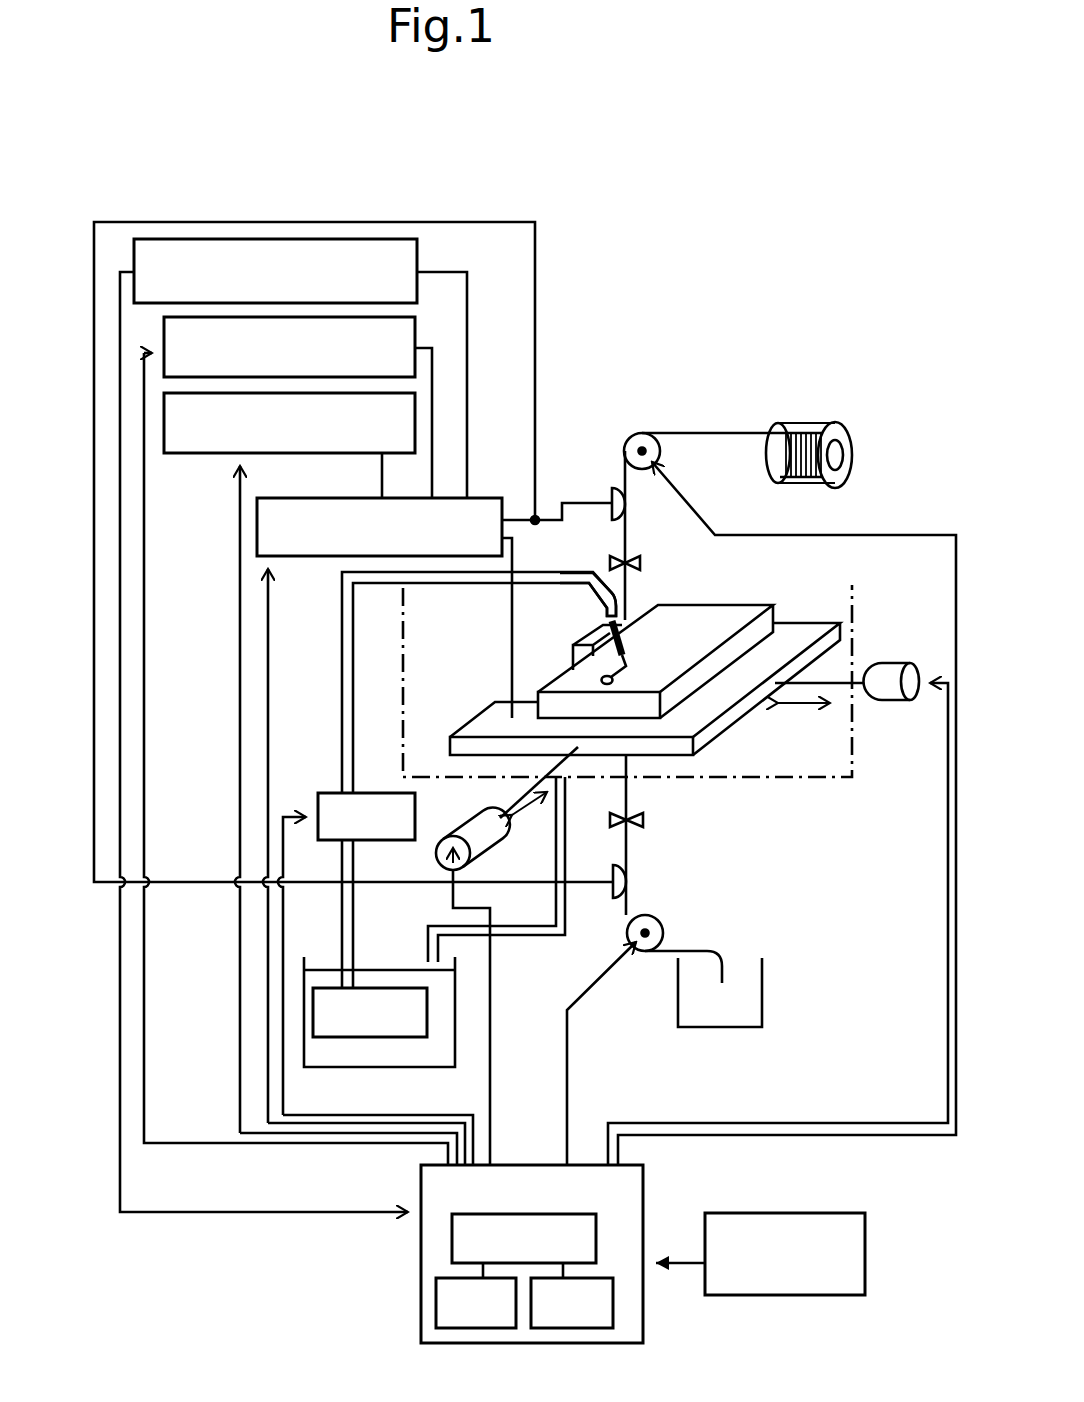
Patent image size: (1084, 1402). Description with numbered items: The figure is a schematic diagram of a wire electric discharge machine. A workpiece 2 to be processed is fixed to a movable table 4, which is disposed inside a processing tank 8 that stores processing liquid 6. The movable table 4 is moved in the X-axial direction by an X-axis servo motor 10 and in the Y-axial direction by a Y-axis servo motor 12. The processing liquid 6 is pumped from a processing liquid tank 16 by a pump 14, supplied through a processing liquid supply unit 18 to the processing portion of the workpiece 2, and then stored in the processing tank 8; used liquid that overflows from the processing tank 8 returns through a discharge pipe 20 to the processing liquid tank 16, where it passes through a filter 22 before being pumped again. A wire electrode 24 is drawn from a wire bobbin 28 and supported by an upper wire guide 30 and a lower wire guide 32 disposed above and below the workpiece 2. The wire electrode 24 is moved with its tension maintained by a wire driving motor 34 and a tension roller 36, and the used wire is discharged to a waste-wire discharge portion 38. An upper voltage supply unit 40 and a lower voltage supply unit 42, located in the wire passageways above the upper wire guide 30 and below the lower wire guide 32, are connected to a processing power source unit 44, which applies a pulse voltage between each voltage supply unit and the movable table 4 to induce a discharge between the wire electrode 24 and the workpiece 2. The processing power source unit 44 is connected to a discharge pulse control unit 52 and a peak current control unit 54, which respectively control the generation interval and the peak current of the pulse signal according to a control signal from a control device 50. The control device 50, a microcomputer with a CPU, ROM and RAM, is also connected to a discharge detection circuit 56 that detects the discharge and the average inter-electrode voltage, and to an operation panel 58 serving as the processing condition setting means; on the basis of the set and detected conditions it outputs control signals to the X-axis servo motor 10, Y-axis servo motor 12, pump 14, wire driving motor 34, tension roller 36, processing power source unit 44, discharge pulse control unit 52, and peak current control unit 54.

The workpiece 2 is at (705, 608).
The movable table 4 is at (788, 628).
The processing liquid 6 is at (607, 623).
The processing tank 8 is at (853, 730).
The X-axis servo motor 10 is at (887, 677).
The Y-axis servo motor 12 is at (482, 846).
The pump 14 is at (325, 792).
The processing liquid tank 16 is at (368, 1067).
The processing liquid supply unit 18 is at (603, 603).
The discharge pipe 20 is at (526, 935).
The filter 22 is at (357, 1037).
The wire electrode 24 is at (740, 430).
The wire bobbin 28 is at (840, 435).
The upper wire guide 30 is at (642, 566).
The lower wire guide 32 is at (645, 820).
The wire driving motor 34 is at (655, 918).
The tension roller 36 is at (641, 433).
The waste-wire discharge portion 38 is at (762, 985).
The upper voltage supply unit 40 is at (626, 516).
The lower voltage supply unit 42 is at (624, 870).
The processing power source unit 44 is at (302, 498).
The control device 50 is at (644, 1186).
The discharge pulse control unit 52 is at (185, 453).
The peak current control unit 54 is at (415, 323).
The discharge detection circuit 56 is at (417, 246).
The operation panel 58 is at (763, 1213).